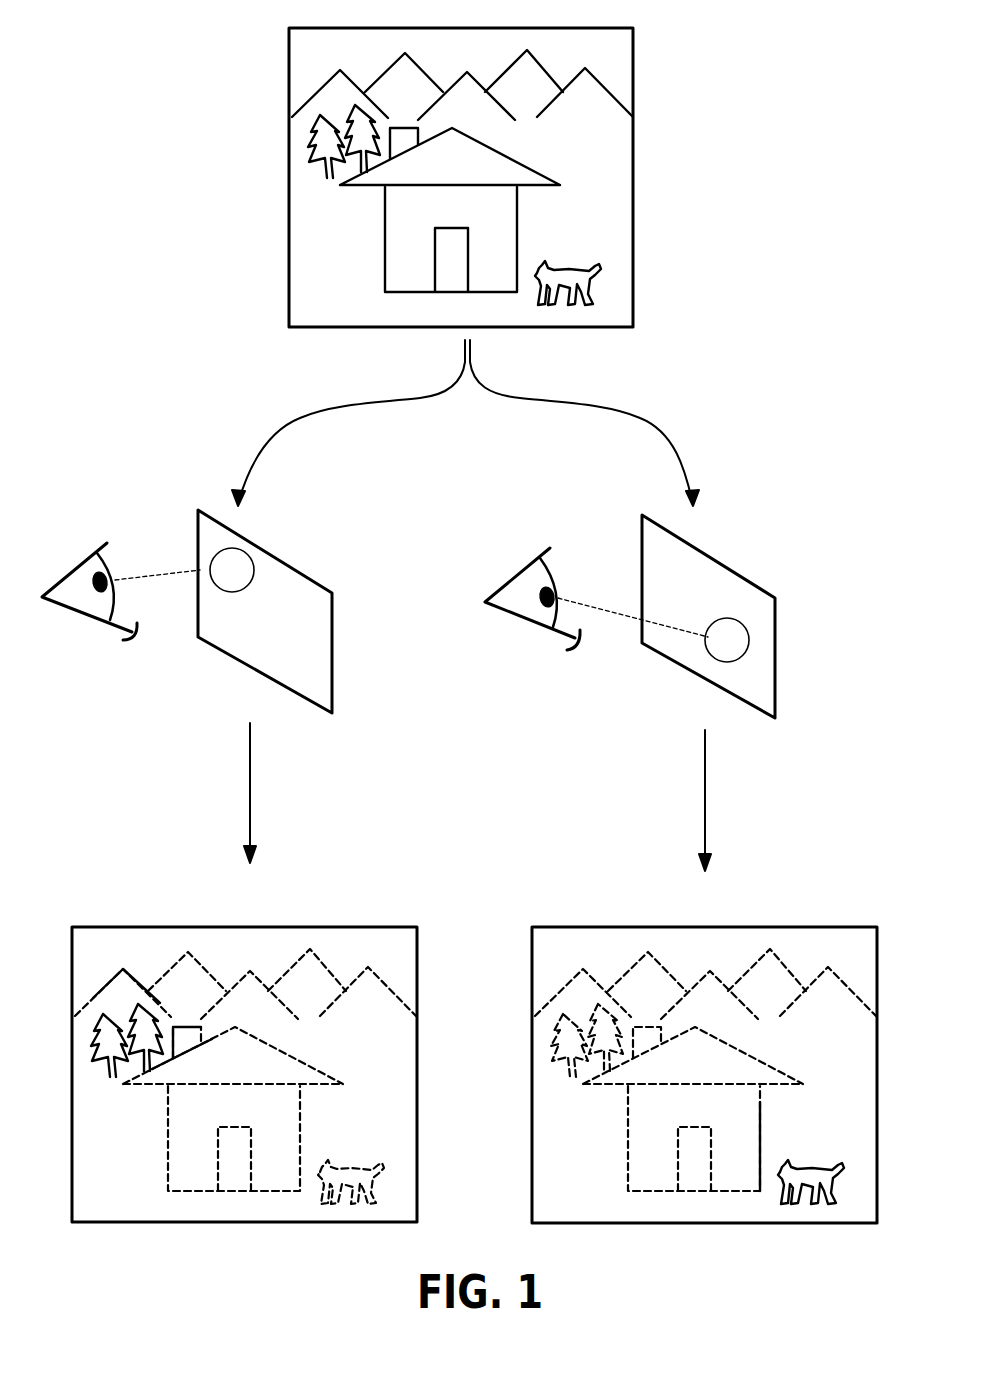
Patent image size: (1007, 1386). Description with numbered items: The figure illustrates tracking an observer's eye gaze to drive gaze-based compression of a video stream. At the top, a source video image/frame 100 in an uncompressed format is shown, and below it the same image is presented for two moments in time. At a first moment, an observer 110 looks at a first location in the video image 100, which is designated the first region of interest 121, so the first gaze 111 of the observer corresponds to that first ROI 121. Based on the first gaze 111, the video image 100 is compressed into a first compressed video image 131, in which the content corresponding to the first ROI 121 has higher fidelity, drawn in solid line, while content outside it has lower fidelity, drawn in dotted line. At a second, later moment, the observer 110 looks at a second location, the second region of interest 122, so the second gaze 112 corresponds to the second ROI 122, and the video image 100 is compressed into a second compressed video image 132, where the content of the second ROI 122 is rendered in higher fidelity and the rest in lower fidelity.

The video image/frame 100 is at (637, 185).
The observer 110 is at (83, 563).
The first gaze 111 is at (145, 633).
The second gaze 112 is at (598, 632).
The first region of interest 121 is at (235, 550).
The second region of interest 122 is at (750, 645).
The first compressed video image 131 is at (328, 925).
The second compressed video image 132 is at (785, 923).